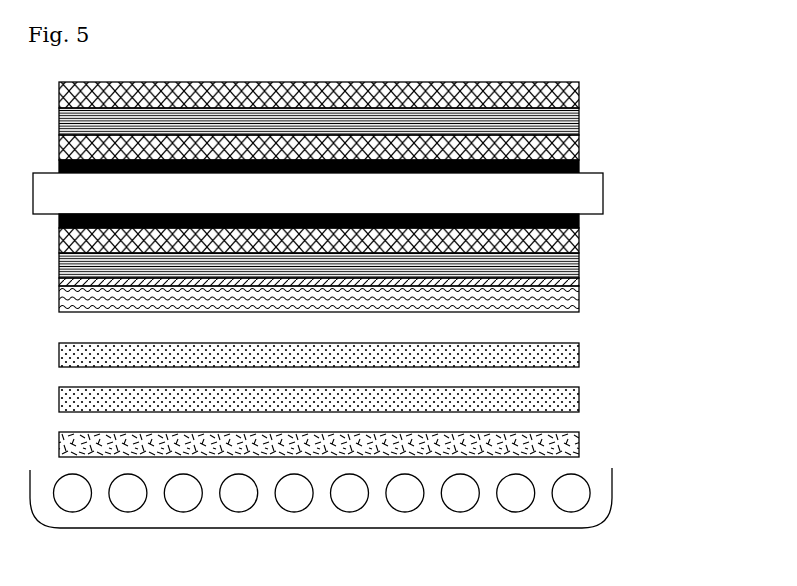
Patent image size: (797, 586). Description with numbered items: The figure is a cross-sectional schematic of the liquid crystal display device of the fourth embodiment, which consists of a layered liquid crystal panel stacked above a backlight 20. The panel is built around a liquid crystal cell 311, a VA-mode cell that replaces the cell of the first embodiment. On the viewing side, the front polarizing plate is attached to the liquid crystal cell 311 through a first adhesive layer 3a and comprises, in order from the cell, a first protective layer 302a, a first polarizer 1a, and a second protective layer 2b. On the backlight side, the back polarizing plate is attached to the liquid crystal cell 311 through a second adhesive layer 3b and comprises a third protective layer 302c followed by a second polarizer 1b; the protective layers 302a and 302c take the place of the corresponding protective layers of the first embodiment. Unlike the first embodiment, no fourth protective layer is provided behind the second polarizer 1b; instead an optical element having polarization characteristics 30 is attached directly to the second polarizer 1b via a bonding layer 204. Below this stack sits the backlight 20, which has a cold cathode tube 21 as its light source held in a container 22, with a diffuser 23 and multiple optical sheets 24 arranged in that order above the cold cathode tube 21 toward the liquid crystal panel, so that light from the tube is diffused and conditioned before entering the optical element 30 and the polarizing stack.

The second protective layer 2b is at (577, 93).
The first polarizer 1a is at (577, 118).
The first protective layer 302a is at (577, 143).
The first adhesive layer 3a is at (577, 167).
The liquid crystal cell 311 is at (590, 193).
The second adhesive layer 3b is at (578, 220).
The third protective layer 302c is at (578, 245).
The second polarizer 1b is at (578, 270).
The bonding layer 204 is at (578, 283).
The optical element having polarization characteristics 30 is at (578, 298).
The optical sheets 24 is at (610, 340).
The diffuser 23 is at (580, 445).
The container 22 is at (612, 488).
The cold cathode tube 21 is at (364, 520).
The backlight 20 is at (380, 453).